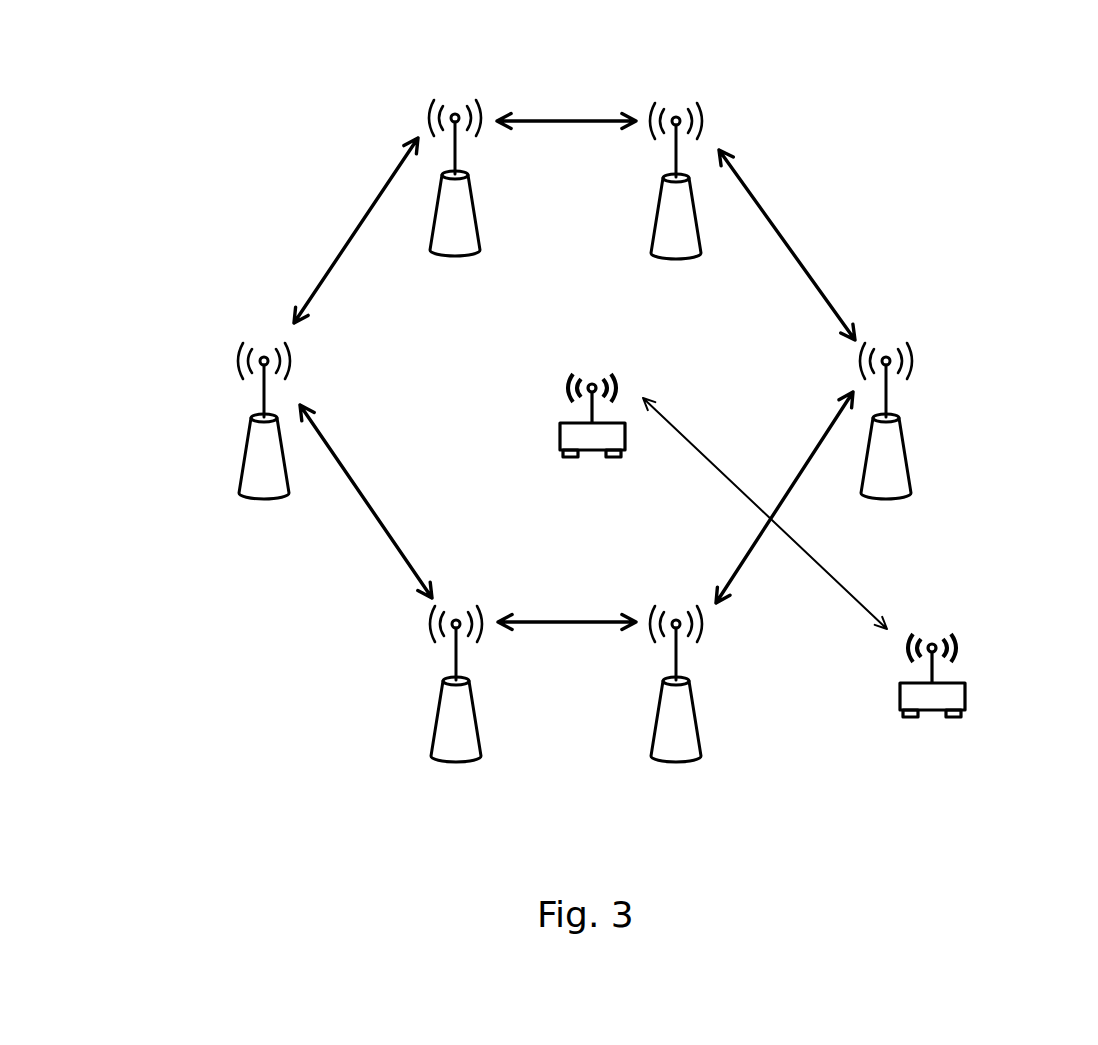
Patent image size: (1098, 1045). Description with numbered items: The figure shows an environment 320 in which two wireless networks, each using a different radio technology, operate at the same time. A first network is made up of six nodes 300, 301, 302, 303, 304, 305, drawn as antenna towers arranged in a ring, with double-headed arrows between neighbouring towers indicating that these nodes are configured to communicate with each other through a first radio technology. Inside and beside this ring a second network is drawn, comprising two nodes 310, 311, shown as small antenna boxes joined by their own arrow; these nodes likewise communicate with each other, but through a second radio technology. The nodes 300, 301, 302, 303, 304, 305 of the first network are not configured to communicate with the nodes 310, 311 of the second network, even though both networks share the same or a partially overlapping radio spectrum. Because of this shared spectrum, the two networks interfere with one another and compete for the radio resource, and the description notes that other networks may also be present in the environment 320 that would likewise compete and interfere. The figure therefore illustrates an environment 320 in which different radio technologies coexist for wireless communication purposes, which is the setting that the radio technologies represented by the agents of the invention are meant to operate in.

The environment 320 is at (127, 180).
The node 300 is at (230, 413).
The node 301 is at (432, 80).
The node 302 is at (728, 112).
The node 303 is at (928, 330).
The node 304 is at (418, 727).
The node 305 is at (716, 720).
The node 310 is at (543, 393).
The node 311 is at (992, 627).